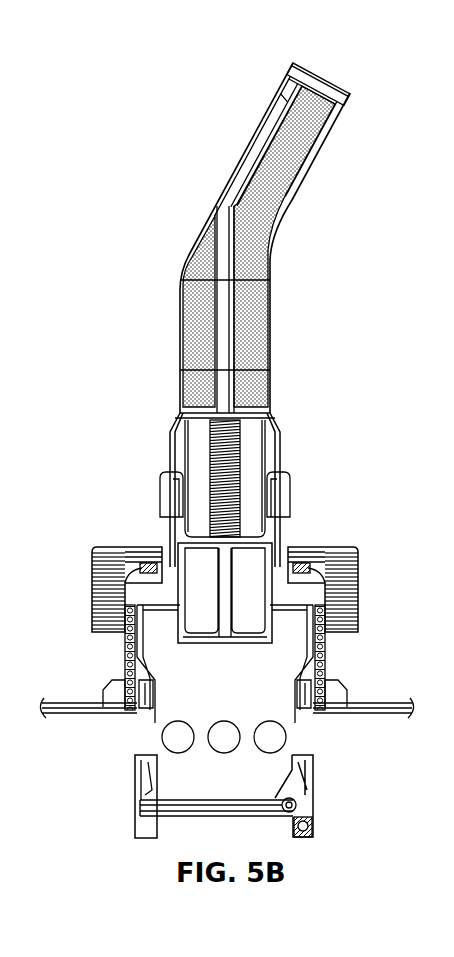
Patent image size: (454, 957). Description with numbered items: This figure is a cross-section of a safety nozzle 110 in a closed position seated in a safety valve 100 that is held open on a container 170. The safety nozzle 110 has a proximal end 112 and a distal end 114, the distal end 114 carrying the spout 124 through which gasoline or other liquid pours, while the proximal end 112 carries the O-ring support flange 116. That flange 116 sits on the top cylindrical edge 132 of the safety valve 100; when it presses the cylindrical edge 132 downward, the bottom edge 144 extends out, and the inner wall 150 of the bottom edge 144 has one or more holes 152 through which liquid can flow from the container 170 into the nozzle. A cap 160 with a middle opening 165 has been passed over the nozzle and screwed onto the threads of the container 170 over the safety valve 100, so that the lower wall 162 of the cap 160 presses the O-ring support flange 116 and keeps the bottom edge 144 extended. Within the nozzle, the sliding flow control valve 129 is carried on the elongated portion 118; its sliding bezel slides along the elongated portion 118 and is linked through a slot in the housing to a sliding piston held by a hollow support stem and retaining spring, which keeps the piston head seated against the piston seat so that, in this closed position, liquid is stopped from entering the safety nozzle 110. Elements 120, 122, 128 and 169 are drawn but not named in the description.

The safety valve 100 is at (267, 673).
The safety nozzle 110 is at (306, 329).
The proximal end 112 is at (300, 580).
The distal end 114 is at (345, 110).
The O-ring support flange 116 is at (300, 581).
The elongated portion 118 is at (250, 388).
The conduit tube 120 is at (253, 257).
The angled conduit passage 122 is at (283, 168).
The spout 124 is at (341, 88).
The vent channel 128 is at (283, 97).
The sliding flow control valve 129 is at (165, 497).
The top cylindrical edge 132 is at (318, 612).
The bottom edge 144 is at (313, 815).
The inner wall 150 is at (305, 800).
The holes 152 is at (274, 739).
The cap 160 is at (92, 612).
The lower wall 162 is at (148, 584).
The middle opening 165 is at (160, 565).
The cross bar 169 is at (212, 817).
The container 170 is at (72, 706).